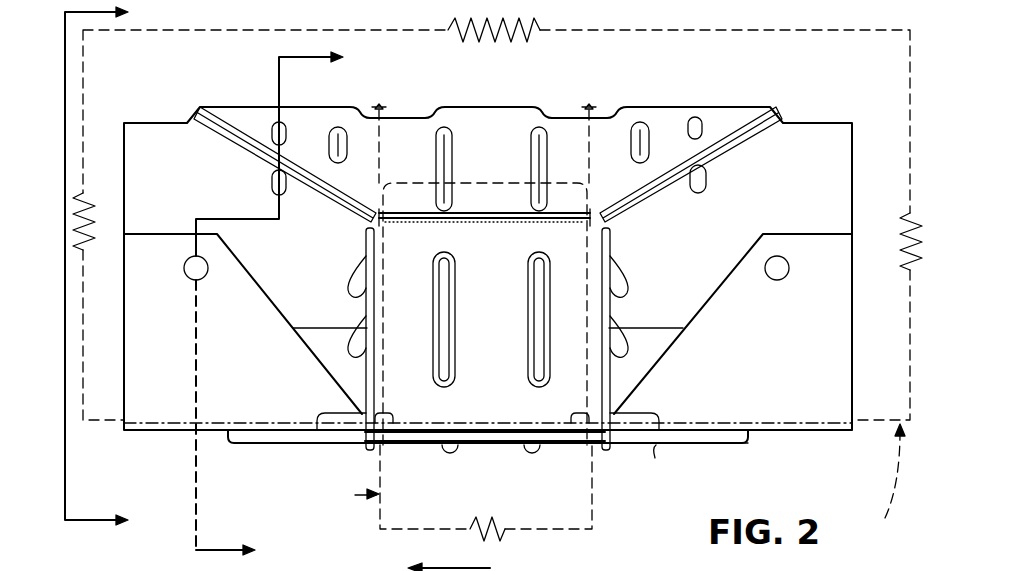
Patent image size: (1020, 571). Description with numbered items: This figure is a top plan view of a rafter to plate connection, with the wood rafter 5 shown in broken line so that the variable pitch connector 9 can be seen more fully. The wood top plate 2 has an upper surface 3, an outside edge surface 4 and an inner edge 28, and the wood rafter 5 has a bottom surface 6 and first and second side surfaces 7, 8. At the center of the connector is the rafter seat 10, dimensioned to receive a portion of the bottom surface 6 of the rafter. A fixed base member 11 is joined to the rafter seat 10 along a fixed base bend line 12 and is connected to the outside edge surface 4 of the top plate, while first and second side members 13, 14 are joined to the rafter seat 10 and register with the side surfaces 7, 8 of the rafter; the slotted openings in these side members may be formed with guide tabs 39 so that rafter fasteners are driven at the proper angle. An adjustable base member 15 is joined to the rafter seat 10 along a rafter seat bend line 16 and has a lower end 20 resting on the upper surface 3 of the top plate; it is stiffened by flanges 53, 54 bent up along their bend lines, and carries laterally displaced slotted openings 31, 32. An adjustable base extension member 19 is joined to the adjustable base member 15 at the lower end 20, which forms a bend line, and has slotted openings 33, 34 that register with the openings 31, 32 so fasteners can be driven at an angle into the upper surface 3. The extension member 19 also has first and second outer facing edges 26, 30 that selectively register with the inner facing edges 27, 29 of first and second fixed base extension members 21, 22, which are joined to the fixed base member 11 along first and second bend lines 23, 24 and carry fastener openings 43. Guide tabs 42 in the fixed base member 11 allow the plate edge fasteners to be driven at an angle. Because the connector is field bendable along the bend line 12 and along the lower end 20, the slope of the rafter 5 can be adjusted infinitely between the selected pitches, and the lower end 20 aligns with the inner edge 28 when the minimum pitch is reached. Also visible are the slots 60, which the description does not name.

The wood top plate 2 is at (886, 487).
The upper surface 3 is at (881, 367).
The outside edge surface 4 is at (852, 462).
The wood rafter 5 is at (278, 512).
The bottom surface 6 is at (281, 306).
The first side surface 7 is at (377, 520).
The second side surface 8 is at (593, 523).
The variable pitch connector 9 is at (797, 432).
The rafter seat 10 is at (486, 362).
The fixed base member 11 is at (700, 444).
The fixed base bend line 12 is at (473, 432).
The first side member 13 is at (348, 410).
The second side member 14 is at (630, 410).
The adjustable base member 15 is at (484, 143).
The rafter seat bend line 16 is at (479, 208).
The adjustable base extension member 19 is at (300, 262).
The lower end 20 is at (647, 107).
The first fixed base extension member 21 is at (200, 292).
The second fixed base extension member 22 is at (813, 282).
The first bend line 23 is at (258, 432).
The second bend line 24 is at (727, 432).
The first outer facing edge 26 is at (180, 244).
The first inner facing edge 27 is at (161, 230).
The inner edge 28 is at (268, 30).
The second inner facing edge 29 is at (790, 226).
The second outer facing edge 30 is at (787, 233).
The slotted opening 31 is at (274, 120).
The slotted opening 32 is at (702, 118).
The slotted opening 33 is at (270, 188).
The slotted opening 34 is at (706, 172).
The guide tabs 39 is at (343, 350).
The guide tabs 42 is at (447, 450).
The fastener openings 43 is at (204, 277).
The flange 53 is at (321, 155).
The flange 54 is at (668, 150).
The slots 60 is at (530, 360).